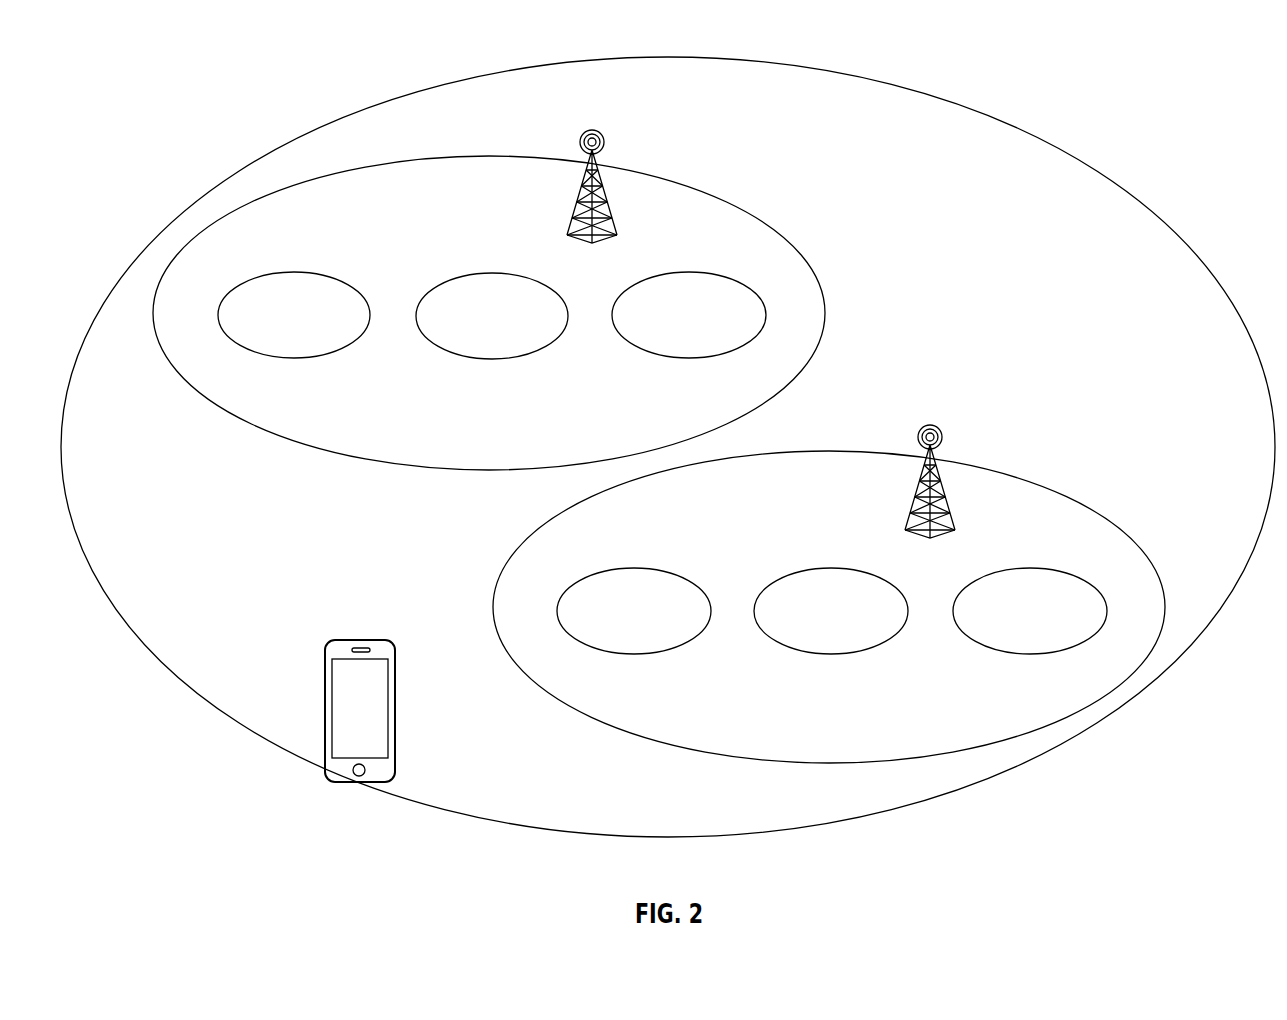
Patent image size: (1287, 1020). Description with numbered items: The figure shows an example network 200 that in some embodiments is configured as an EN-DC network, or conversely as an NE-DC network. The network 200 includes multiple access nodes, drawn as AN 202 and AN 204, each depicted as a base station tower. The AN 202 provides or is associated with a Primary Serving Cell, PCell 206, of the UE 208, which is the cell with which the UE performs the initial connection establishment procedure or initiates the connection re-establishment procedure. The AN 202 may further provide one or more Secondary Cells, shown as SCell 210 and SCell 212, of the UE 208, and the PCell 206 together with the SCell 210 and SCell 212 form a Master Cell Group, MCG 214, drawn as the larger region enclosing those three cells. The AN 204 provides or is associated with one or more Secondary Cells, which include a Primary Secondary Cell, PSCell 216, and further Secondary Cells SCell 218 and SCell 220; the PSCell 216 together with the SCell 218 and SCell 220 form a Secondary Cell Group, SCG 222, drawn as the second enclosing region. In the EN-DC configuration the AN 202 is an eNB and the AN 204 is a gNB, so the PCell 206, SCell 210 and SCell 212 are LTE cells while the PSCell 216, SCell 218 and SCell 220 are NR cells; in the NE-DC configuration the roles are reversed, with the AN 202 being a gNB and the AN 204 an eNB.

The network 200 is at (849, 57).
The AN 202 is at (585, 150).
The AN 204 is at (920, 448).
The PCell 206 is at (277, 334).
The UE 208 is at (328, 668).
The SCell 210 is at (475, 334).
The SCell 212 is at (672, 334).
The MCG 214 is at (473, 388).
The PSCell 216 is at (617, 629).
The SCell 218 is at (814, 629).
The SCell 220 is at (1013, 629).
The SCG 222 is at (811, 683).